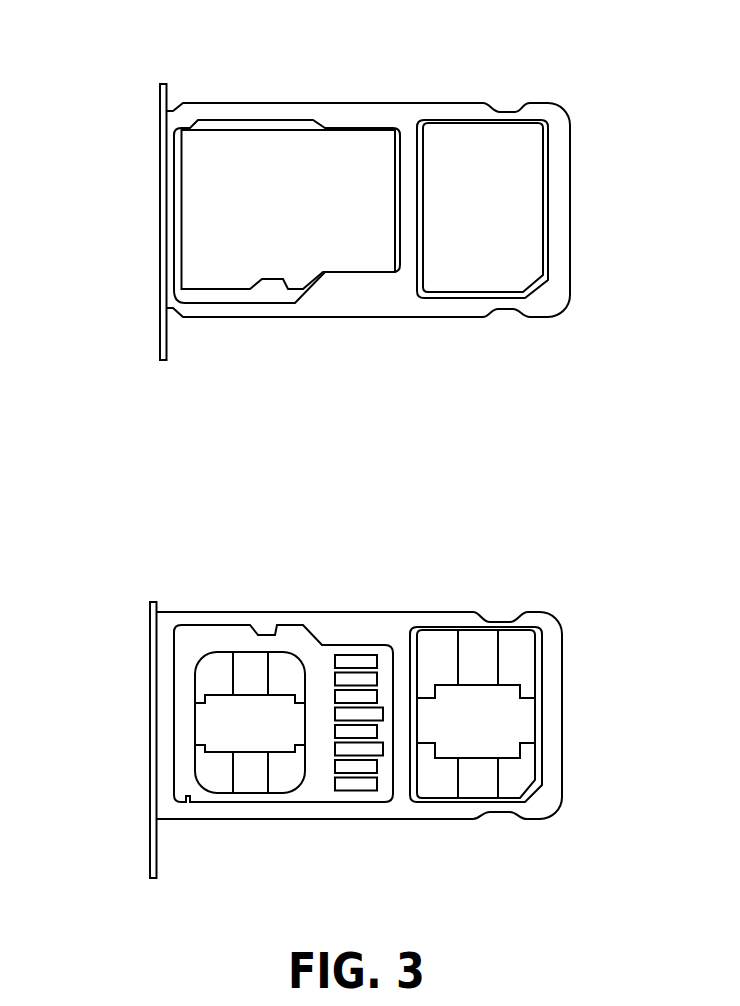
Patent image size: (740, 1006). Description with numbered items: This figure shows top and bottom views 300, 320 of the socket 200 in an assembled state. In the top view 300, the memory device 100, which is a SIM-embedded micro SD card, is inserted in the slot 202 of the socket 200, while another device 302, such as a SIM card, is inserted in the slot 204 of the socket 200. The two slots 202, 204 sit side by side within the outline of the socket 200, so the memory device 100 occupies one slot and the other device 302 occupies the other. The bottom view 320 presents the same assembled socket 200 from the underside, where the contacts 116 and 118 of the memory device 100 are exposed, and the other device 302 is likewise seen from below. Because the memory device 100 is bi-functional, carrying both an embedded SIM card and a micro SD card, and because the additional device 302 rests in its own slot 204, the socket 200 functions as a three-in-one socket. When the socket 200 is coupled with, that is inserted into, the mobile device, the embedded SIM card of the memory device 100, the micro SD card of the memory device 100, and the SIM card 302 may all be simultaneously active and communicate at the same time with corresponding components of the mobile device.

The top view 300 is at (154, 44).
The socket 200 is at (371, 93).
The memory device 100 is at (215, 176).
The slot 202 is at (268, 290).
The slot 204 is at (452, 298).
The another device 302 is at (466, 153).
The bottom view 320 is at (141, 543).
The contacts 116 is at (248, 670).
The contacts 118 is at (345, 695).